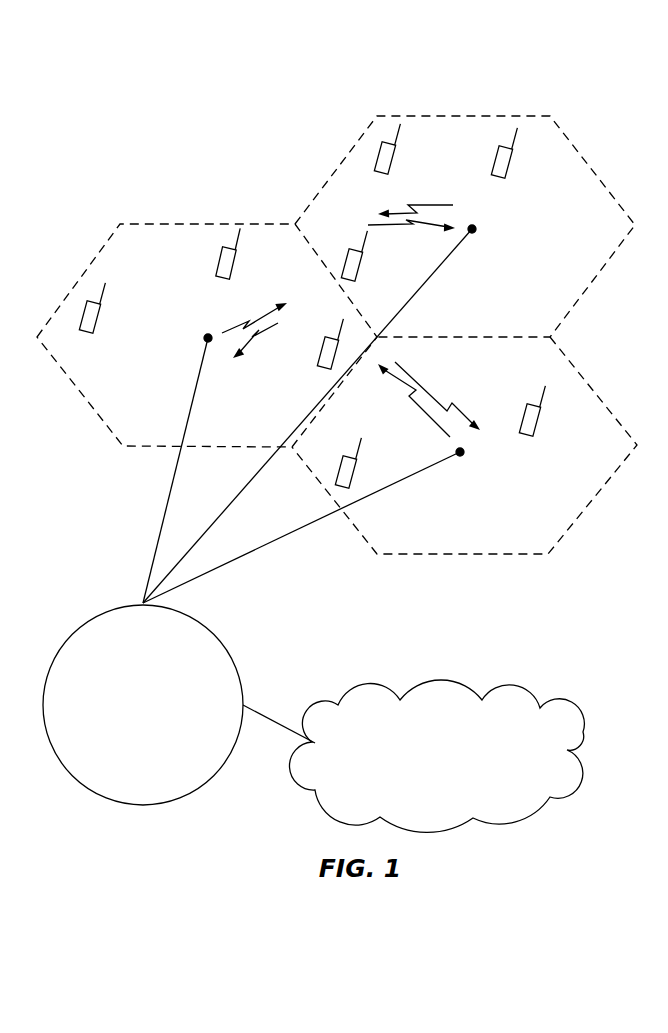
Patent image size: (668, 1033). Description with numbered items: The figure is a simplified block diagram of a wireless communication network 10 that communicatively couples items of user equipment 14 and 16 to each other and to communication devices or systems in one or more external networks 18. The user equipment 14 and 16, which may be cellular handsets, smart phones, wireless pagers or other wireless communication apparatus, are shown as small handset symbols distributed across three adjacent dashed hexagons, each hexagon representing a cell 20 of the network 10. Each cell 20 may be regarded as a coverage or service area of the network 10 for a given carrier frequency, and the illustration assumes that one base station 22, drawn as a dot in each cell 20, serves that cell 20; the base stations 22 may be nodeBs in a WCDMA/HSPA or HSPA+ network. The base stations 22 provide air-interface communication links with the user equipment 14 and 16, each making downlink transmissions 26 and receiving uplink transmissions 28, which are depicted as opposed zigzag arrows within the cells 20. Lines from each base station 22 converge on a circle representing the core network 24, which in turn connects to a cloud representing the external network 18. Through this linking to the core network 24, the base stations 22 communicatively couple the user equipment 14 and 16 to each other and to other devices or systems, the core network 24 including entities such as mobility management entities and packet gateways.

The wireless communication network 10 is at (205, 126).
The user equipment 14 is at (320, 366).
The user equipment 16 is at (93, 331).
The external network 18 is at (436, 756).
The cell 20 is at (98, 418).
The base station 22 is at (205, 340).
The core network 24 is at (143, 705).
The downlink transmission 26 is at (235, 326).
The uplink transmission 28 is at (248, 354).